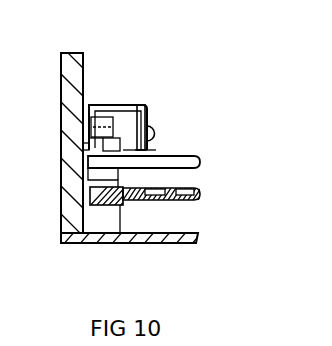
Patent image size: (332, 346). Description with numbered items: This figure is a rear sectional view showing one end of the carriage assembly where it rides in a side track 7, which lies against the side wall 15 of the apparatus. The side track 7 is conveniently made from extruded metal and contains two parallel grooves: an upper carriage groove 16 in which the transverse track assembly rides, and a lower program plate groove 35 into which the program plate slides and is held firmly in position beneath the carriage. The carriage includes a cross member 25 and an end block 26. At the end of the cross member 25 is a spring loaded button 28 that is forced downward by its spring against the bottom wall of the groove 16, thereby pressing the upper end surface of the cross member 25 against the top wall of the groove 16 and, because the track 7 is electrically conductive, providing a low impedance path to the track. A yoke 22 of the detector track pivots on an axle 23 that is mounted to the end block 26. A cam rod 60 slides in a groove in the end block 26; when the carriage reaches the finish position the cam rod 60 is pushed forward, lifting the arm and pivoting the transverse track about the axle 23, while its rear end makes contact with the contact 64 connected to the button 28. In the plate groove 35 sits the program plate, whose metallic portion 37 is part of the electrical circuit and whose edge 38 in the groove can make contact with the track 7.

The side wall 15 is at (66, 52).
The side track 7 is at (103, 215).
The cam rod 60 is at (127, 52).
The end block 26 is at (122, 132).
The yoke 22 is at (150, 112).
The axle 23 is at (156, 127).
The contact 64 is at (152, 148).
The cross member 25 is at (200, 163).
The groove 16 is at (88, 170).
The spring loaded button 28 is at (118, 172).
The edge of the plate 38 is at (93, 178).
The program plate groove 35 is at (126, 200).
The metallic portion of the plate 37 is at (200, 197).